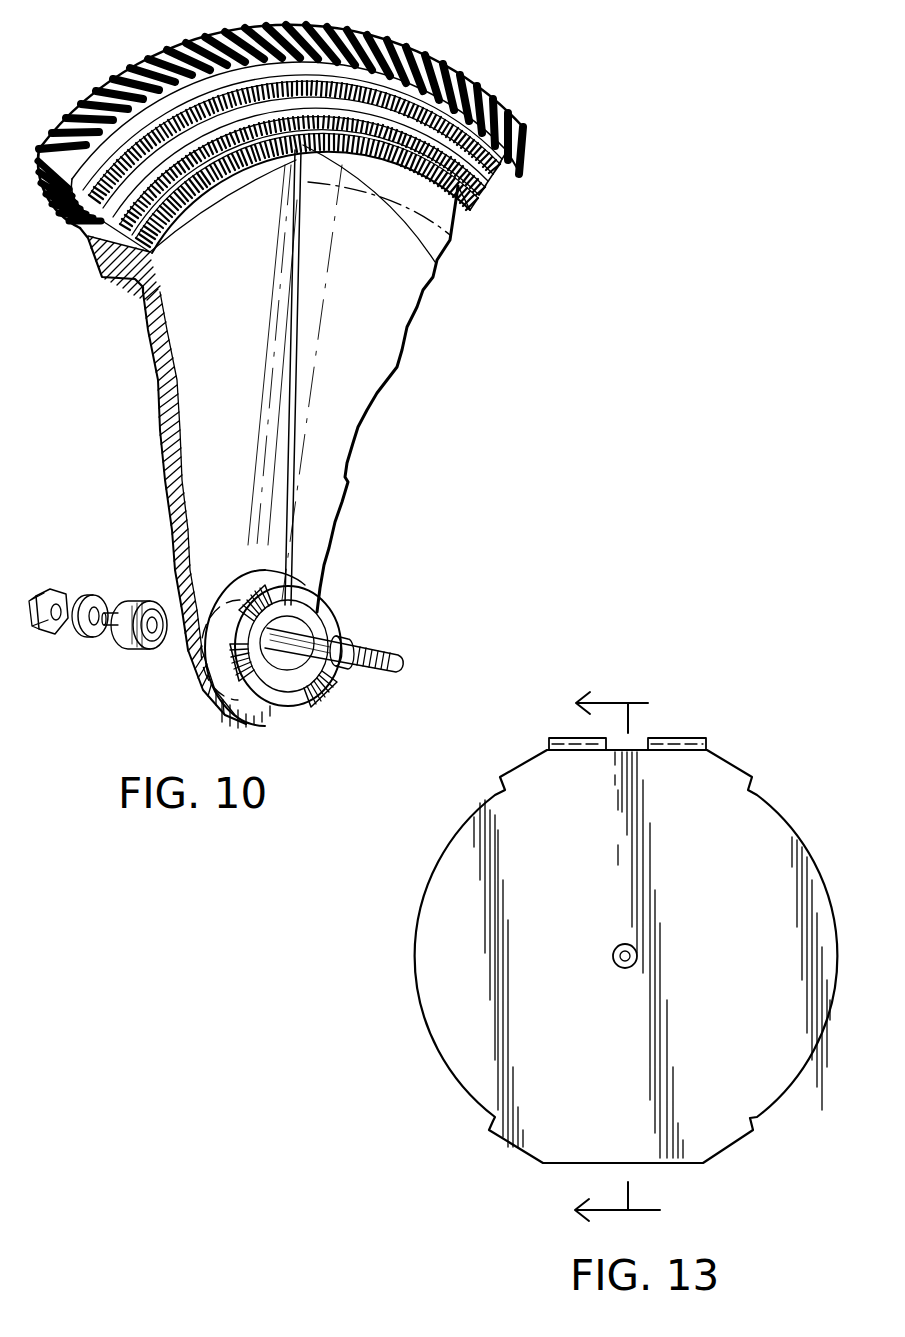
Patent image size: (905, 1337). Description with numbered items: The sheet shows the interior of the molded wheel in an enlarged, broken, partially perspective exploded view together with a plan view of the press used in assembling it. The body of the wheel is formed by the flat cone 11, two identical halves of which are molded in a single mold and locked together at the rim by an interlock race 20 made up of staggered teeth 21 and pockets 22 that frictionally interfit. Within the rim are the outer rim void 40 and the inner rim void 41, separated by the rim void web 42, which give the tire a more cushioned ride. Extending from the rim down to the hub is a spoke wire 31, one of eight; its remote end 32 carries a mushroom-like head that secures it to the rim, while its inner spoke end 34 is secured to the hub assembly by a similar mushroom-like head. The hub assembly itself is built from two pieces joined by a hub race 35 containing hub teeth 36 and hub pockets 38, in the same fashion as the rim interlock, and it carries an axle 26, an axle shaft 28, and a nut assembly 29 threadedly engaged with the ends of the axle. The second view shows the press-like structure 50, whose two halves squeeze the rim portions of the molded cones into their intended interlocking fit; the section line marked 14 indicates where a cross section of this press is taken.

In FIG. 10, the flat cone 11 is at (236, 392).
In FIG. 13, the section line 14- 14 is at (637, 962).
In FIG. 10, the interlock race 20 is at (308, 138).
In FIG. 10, the teeth 21 is at (213, 143).
In FIG. 10, the pockets 22 is at (208, 56).
In FIG. 10, the axle 26 is at (400, 667).
In FIG. 10, the axle shaft 28 is at (343, 670).
In FIG. 10, the nut assembly 29 is at (128, 645).
In FIG. 10, the spoke wire 31 is at (290, 462).
In FIG. 10, the remote end of the spoke 32 is at (435, 262).
In FIG. 10, the inner spoke end 34 is at (335, 600).
In FIG. 10, the hub race 35 is at (340, 636).
In FIG. 10, the hub teeth 36 is at (325, 585).
In FIG. 10, the hub pockets 38 is at (253, 602).
In FIG. 10, the outer rim void 40 is at (500, 152).
In FIG. 10, the inner rim void 41 is at (470, 200).
In FIG. 10, the rim void web 42 is at (92, 243).
In FIG. 13, the press-like structure 50 is at (803, 850).